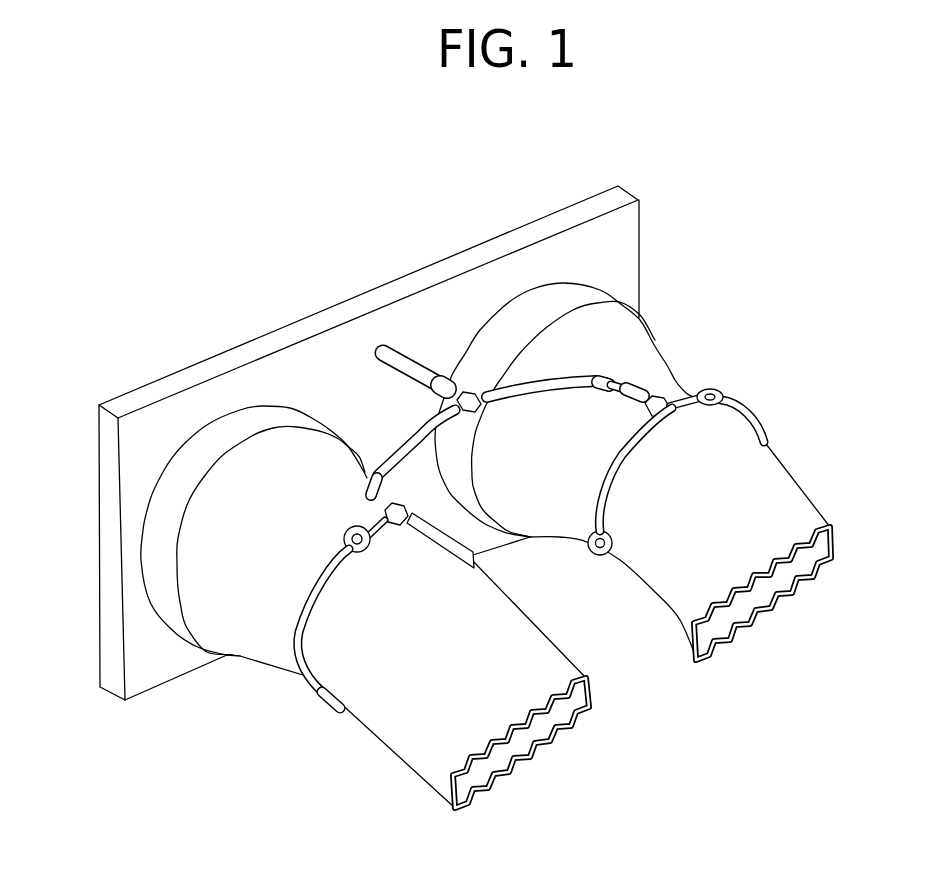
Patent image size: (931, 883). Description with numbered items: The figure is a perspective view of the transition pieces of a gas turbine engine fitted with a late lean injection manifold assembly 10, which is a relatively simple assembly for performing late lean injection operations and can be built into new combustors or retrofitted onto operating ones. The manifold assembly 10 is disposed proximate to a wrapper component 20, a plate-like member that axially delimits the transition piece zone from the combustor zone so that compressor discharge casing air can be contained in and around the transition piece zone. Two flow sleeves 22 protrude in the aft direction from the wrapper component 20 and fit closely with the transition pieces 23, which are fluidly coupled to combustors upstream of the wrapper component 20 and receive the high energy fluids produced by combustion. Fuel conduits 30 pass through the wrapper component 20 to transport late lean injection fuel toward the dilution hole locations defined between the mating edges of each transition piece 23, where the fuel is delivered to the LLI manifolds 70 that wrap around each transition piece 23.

The late lean injection manifold assembly 10 is at (440, 473).
The wrapper component 20 is at (557, 247).
The flow sleeve 22 is at (203, 548).
The transition piece 23 is at (442, 702).
The fuel conduit 30 is at (413, 358).
The LLI manifold 70 is at (752, 406).